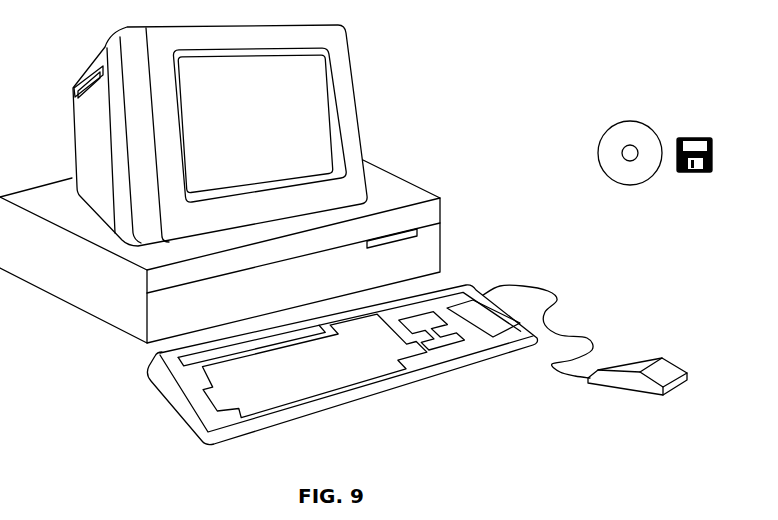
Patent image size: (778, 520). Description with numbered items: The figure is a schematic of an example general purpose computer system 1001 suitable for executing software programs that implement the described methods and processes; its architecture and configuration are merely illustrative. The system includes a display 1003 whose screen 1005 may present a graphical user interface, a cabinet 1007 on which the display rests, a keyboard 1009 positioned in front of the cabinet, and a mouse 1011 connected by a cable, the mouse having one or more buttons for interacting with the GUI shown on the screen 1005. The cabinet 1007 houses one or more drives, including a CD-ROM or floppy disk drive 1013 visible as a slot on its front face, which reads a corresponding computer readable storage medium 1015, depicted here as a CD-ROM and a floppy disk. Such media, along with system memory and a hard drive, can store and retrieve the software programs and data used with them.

The computer system 1001 is at (541, 62).
The display 1003 is at (360, 137).
The screen 1005 is at (328, 80).
The cabinet 1007 is at (110, 327).
The keyboard 1009 is at (341, 404).
The mouse 1011 is at (677, 360).
The CD-ROM or floppy disk drive 1013 is at (418, 226).
The computer readable storage medium 1015 is at (666, 115).